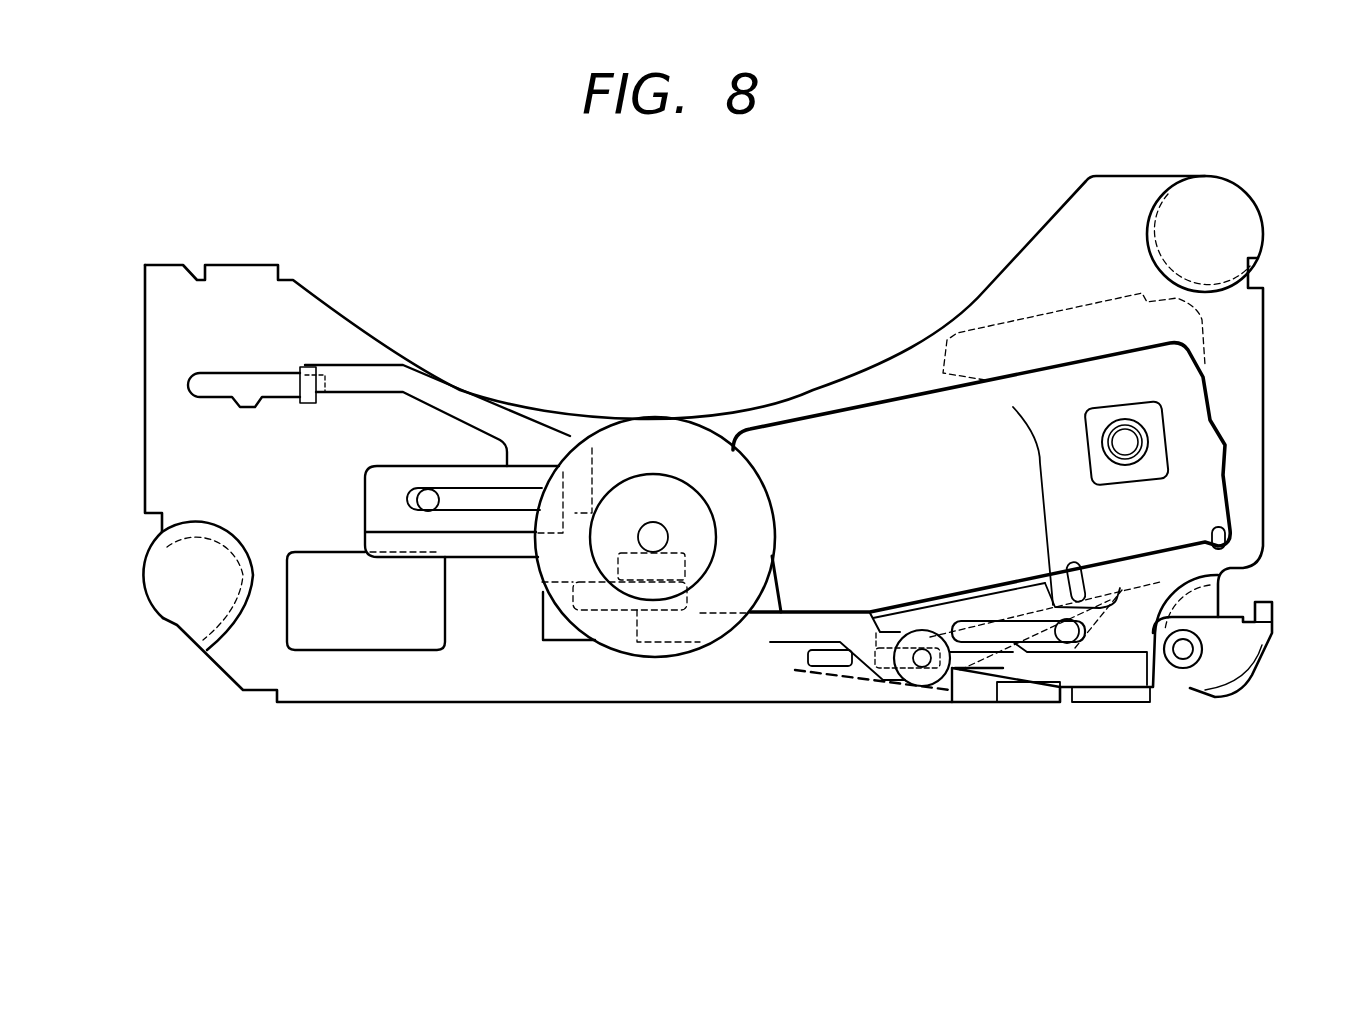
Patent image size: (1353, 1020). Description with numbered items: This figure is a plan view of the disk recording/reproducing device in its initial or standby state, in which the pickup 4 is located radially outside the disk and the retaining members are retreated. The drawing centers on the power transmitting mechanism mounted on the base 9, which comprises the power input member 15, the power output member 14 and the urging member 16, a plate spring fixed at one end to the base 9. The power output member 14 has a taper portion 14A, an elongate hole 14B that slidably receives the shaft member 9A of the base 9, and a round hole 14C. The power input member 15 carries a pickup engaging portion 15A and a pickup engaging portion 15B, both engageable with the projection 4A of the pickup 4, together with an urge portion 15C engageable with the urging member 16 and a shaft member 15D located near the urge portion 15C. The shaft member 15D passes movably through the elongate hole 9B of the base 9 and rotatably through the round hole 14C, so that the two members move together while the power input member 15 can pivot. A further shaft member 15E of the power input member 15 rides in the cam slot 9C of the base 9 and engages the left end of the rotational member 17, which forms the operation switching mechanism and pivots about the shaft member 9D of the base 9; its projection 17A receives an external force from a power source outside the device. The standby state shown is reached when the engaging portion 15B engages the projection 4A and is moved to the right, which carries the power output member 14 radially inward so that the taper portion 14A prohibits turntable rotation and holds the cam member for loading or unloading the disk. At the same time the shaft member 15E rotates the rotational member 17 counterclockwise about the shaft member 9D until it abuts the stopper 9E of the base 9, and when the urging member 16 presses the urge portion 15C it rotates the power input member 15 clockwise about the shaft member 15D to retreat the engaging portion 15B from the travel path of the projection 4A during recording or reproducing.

The pickup 4 is at (990, 337).
The projection 4A is at (1080, 587).
The base 9 is at (783, 393).
The shaft member 9A is at (428, 489).
The elongate hole 9B is at (895, 690).
The cam slot 9C is at (1030, 700).
The shaft member 9D is at (1203, 649).
The stopper 9E is at (987, 705).
The power output member 14 is at (407, 560).
The taper portion 14A is at (663, 600).
The elongate hole 14B is at (473, 485).
The round hole 14C is at (922, 688).
The power input member 15 is at (1086, 625).
The pickup engaging portion 15A is at (866, 612).
The pickup engaging portion 15B is at (1150, 697).
The urge portion 15C is at (895, 688).
The shaft member 15D is at (955, 737).
The shaft member 15E is at (997, 587).
The urging member 16 is at (800, 672).
The rotational member 17 is at (1240, 667).
The projection 17A is at (1280, 598).